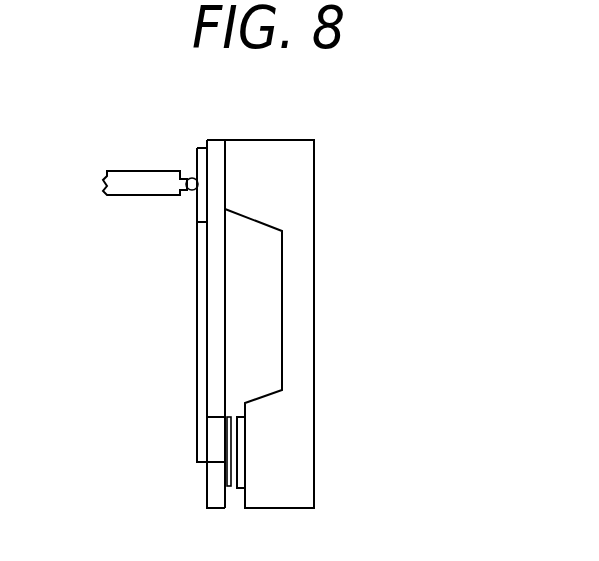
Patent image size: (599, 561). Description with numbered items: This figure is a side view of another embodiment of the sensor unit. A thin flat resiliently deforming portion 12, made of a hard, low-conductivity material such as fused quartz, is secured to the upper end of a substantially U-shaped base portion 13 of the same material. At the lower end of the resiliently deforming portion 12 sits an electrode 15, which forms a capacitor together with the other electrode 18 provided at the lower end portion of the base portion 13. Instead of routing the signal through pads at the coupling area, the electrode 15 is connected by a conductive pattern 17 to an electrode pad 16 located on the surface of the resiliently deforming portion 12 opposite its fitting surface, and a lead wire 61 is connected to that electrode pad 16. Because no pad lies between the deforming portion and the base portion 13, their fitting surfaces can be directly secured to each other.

The base portion 13 is at (307, 303).
The resiliently deforming portion 12 is at (207, 308).
The electrode pad 16 is at (203, 160).
The conductive pattern 17 is at (197, 372).
The electrode 15 is at (225, 477).
The other electrode 18 is at (245, 468).
The lead wire 61 is at (143, 180).